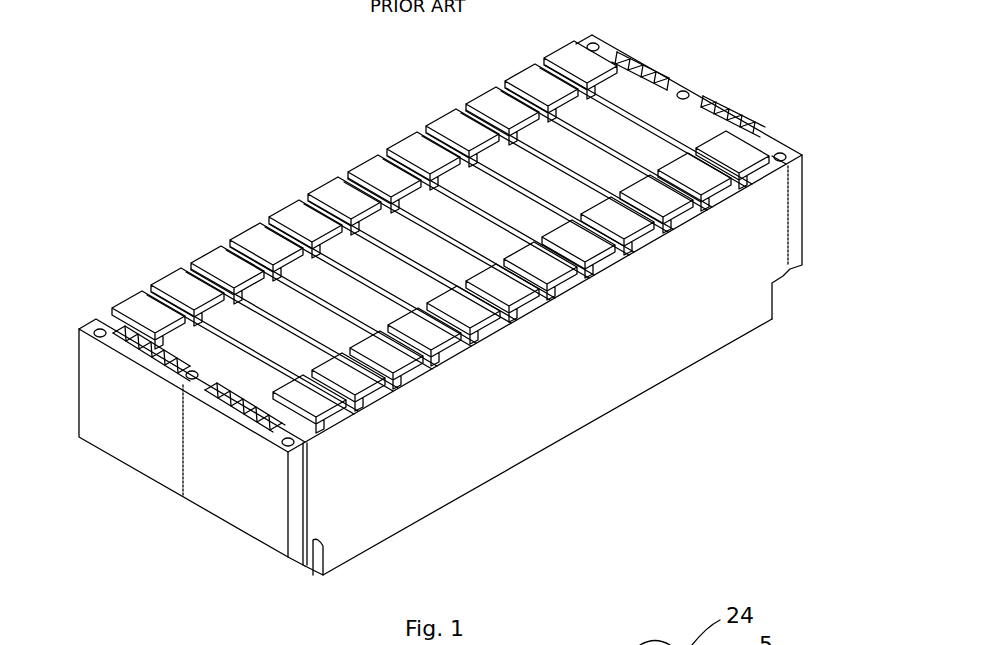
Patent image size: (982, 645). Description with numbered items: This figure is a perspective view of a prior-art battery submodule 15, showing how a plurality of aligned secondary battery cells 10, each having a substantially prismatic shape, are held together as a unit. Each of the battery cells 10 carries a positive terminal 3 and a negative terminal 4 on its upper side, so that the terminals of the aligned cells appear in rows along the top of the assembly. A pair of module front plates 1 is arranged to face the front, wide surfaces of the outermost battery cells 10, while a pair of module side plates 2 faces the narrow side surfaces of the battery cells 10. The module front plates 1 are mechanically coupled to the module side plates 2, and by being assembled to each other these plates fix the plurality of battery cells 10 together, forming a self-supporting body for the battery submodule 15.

The battery submodule 15 is at (140, 89).
The module front plate 1 is at (800, 200).
The module side plate 2 is at (541, 429).
The positive terminal 3 is at (217, 258).
The negative terminal 4 is at (622, 220).
The secondary battery cell 10 is at (462, 182).